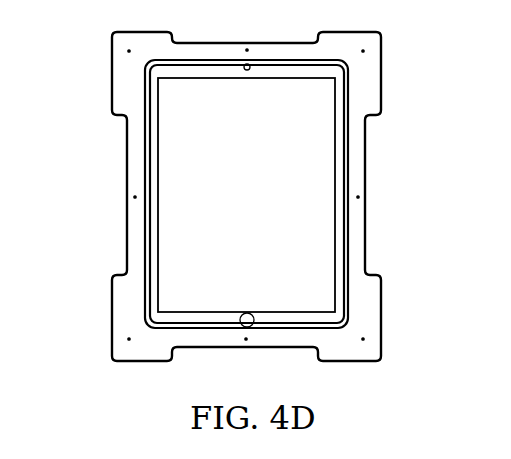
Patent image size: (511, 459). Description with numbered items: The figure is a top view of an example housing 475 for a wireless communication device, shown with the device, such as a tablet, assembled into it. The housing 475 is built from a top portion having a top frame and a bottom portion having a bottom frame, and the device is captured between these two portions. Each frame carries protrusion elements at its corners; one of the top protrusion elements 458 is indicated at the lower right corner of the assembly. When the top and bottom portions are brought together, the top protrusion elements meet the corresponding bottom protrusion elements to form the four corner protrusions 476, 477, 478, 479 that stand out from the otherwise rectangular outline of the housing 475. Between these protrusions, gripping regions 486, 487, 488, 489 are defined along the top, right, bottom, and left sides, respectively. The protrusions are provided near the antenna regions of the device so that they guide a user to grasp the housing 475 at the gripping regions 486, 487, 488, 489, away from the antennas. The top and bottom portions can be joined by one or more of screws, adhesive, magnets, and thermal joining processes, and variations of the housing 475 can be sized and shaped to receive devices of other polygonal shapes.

The top protrusion element 458 is at (382, 335).
The housing 475 is at (381, 31).
The protrusion 476 is at (113, 34).
The protrusion 477 is at (381, 50).
The protrusion 478 is at (367, 362).
The protrusion 479 is at (113, 355).
The gripping region 486 is at (216, 33).
The gripping region 487 is at (372, 197).
The gripping region 488 is at (236, 355).
The gripping region 489 is at (106, 199).